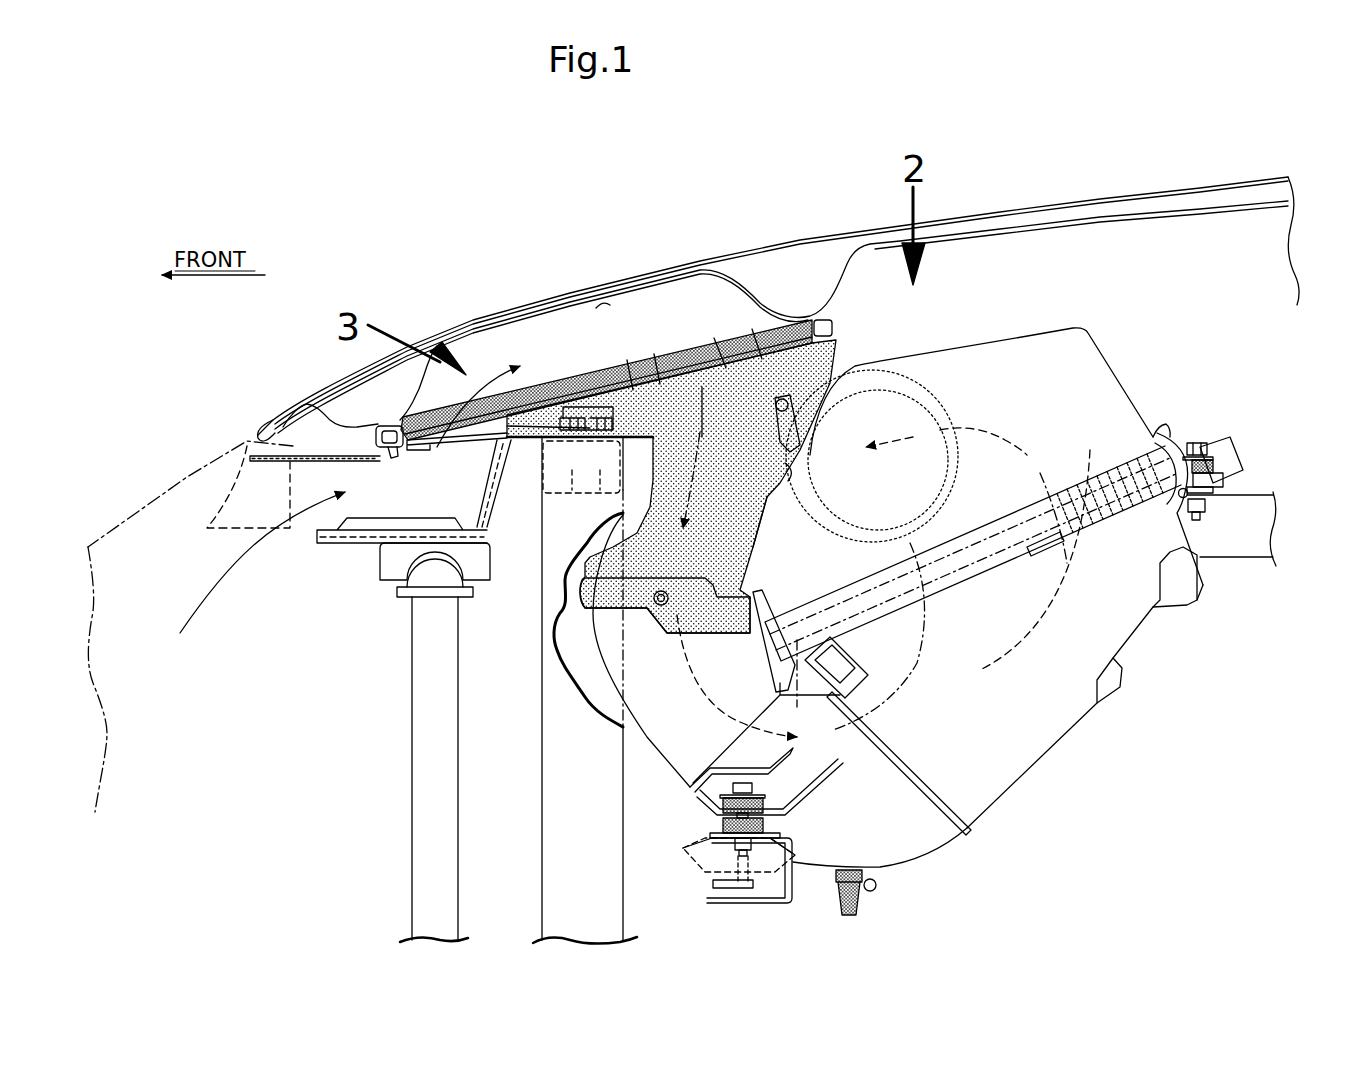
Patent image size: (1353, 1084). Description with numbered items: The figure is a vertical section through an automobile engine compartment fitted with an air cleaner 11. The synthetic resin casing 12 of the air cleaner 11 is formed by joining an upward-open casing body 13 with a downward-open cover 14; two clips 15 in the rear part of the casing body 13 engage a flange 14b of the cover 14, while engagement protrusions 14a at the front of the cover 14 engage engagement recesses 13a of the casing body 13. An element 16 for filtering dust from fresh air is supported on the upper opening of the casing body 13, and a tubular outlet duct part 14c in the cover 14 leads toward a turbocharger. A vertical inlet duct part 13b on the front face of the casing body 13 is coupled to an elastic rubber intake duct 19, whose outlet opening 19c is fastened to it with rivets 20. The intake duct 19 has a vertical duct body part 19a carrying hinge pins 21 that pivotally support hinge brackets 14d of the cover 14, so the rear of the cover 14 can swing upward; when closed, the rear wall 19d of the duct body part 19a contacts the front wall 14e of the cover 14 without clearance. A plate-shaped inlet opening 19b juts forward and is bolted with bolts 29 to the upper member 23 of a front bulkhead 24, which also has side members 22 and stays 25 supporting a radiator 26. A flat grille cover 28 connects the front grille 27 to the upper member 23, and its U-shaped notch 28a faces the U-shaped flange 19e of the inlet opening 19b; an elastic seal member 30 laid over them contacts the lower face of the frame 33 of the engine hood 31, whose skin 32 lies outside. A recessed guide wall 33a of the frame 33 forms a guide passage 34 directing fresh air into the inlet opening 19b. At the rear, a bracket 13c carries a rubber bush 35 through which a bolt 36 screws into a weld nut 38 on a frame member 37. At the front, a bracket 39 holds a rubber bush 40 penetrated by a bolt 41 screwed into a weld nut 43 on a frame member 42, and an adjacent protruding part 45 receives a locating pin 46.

The air cleaner 11 is at (1137, 338).
The casing 12 is at (1045, 323).
The casing body 13 is at (878, 690).
The engagement recess 13a is at (803, 630).
The inlet duct part 13b is at (663, 738).
The bracket 13c is at (1240, 470).
The cover 14 is at (966, 342).
The engagement protrusion 14a is at (766, 733).
The flange 14b is at (1152, 434).
The outlet duct part 14c is at (958, 392).
The hinge bracket 14d is at (792, 422).
The front wall 14e is at (793, 470).
The clip 15 is at (1168, 425).
The element 16 is at (1100, 473).
The intake duct 19 is at (680, 538).
The duct body part 19a is at (768, 541).
The inlet opening 19b is at (605, 400).
The outlet opening 19c is at (712, 638).
The rear wall 19d is at (760, 511).
The U-shaped flange 19e is at (753, 360).
The rivet 20 is at (580, 595).
The hinge pin 21 is at (790, 405).
The side member 22 is at (543, 723).
The upper member 23 is at (572, 497).
The front bulkhead 24 is at (536, 790).
The stay 25 is at (500, 472).
The radiator 26 is at (412, 738).
The front grille 27 is at (187, 477).
The grille cover 28 is at (310, 465).
The U-shaped notch 28a is at (398, 458).
The bolt 29 is at (600, 417).
The seal member 30 is at (549, 394).
The engine hood 31 is at (798, 193).
The skin 32 is at (712, 262).
The frame 33 is at (781, 311).
The guide wall 33a is at (602, 304).
The guide passage 34 is at (575, 340).
The rubber bush 35 is at (1215, 465).
The bolt 36 is at (1198, 443).
The frame member 37 is at (1257, 555).
The weld nut 38 is at (1205, 508).
The bracket 39 is at (734, 857).
The rubber bush 40 is at (766, 820).
The bolt 41 is at (757, 787).
The frame member 42 is at (757, 905).
The weld nut 43 is at (728, 844).
The protruding part 45 is at (710, 862).
The locating pin 46 is at (712, 882).